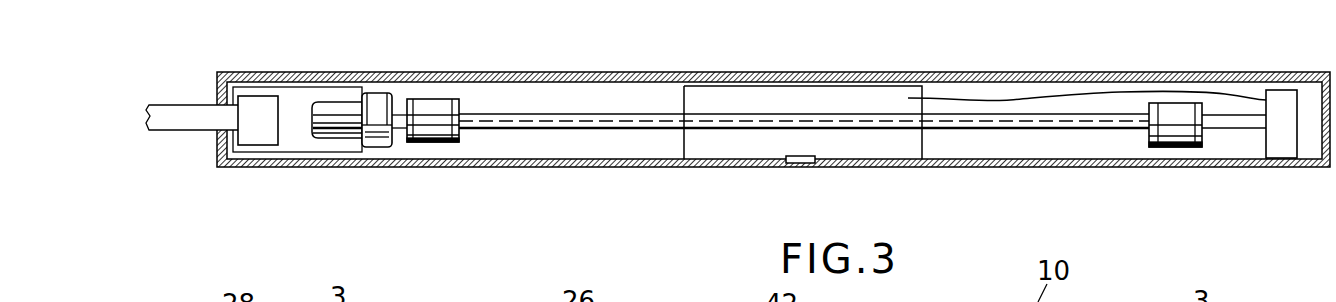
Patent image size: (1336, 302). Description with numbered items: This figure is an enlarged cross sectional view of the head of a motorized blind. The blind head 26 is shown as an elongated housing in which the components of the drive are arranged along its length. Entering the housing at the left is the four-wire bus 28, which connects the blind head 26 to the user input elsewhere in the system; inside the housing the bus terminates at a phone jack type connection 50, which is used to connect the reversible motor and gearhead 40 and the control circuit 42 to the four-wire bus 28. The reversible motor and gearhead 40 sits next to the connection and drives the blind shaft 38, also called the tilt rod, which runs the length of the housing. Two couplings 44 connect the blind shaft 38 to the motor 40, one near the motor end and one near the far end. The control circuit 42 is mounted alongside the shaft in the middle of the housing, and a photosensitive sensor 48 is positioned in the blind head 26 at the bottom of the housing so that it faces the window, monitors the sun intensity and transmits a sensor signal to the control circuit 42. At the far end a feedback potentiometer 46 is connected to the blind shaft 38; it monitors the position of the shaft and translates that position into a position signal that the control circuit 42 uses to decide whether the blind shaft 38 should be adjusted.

The blind head 26 is at (645, 73).
The 4-wire bus 28 is at (178, 113).
The blind shaft 38 is at (588, 120).
The reversible motor and gearhead 40 is at (373, 100).
The control circuit 42 is at (793, 100).
The couplings 44 is at (438, 107).
The feedback potentiometer 46 is at (1285, 98).
The photosensitive sensor 48 is at (800, 163).
The phone jack type connection 50 is at (250, 137).